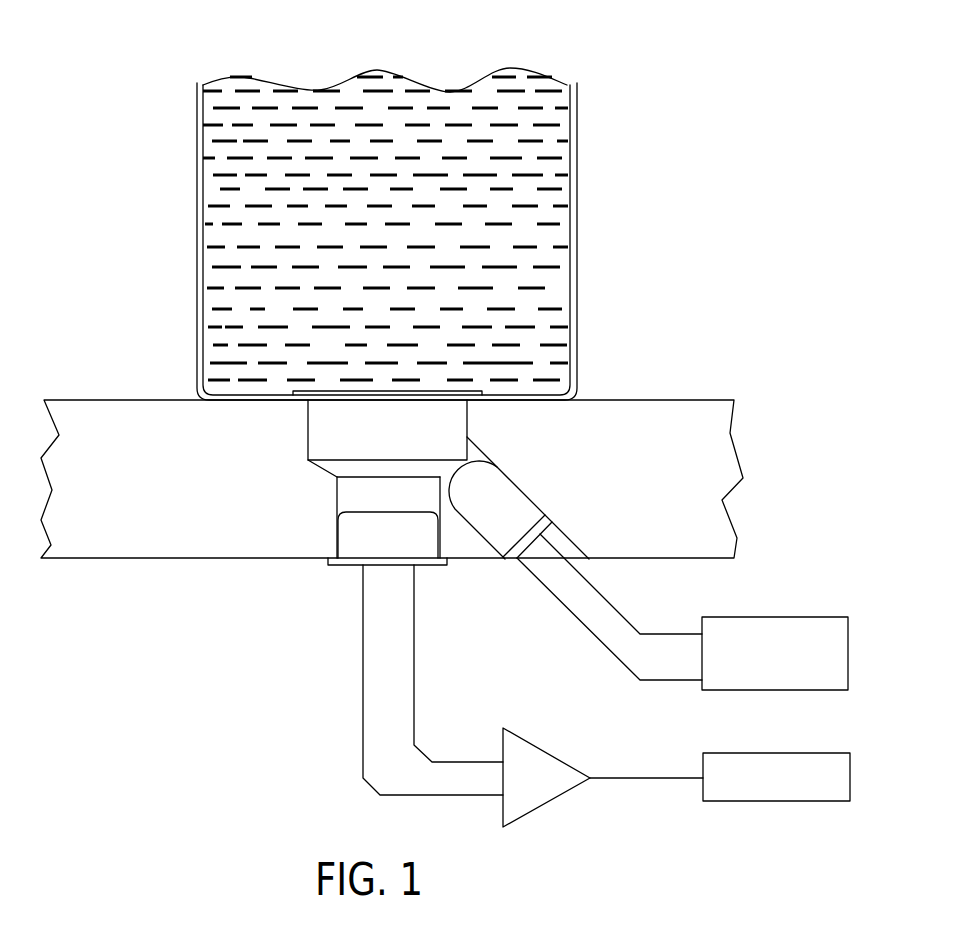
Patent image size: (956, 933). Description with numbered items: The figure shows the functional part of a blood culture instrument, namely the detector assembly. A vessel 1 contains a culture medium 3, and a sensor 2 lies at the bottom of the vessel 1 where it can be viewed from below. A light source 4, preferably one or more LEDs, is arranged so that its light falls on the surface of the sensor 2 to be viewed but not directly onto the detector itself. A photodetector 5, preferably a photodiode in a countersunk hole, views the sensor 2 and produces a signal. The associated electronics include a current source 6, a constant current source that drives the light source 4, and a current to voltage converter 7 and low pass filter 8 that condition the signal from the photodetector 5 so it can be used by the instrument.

The vessel 1 is at (580, 179).
The sensor 2 is at (482, 380).
The culture medium 3 is at (275, 211).
The light source 4 is at (486, 518).
The photodetector 5 is at (355, 550).
The current source 6 is at (850, 652).
The current to voltage converter 7 is at (553, 800).
The low pass filter 8 is at (851, 777).